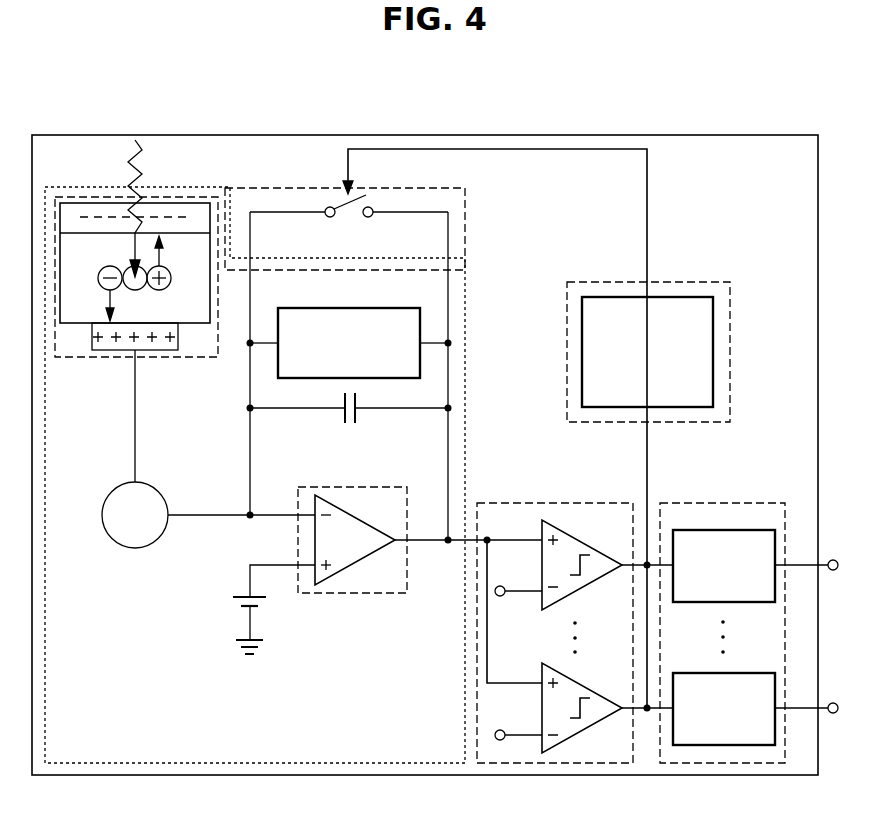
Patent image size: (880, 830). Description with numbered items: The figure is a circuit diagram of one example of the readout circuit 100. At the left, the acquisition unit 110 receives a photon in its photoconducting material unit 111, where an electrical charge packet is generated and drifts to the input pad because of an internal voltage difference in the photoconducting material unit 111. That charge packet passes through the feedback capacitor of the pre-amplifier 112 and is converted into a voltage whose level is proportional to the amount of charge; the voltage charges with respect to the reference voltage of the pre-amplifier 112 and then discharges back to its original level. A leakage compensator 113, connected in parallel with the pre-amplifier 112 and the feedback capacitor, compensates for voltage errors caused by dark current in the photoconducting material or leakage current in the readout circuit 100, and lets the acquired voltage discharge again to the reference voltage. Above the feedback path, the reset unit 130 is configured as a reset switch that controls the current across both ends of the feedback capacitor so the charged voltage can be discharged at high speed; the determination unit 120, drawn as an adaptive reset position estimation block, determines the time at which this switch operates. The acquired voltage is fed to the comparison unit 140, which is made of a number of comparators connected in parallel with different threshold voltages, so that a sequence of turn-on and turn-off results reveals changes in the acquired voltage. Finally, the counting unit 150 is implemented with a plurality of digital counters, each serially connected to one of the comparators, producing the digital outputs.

The readout circuit 100 is at (677, 135).
The acquisition unit 110 is at (173, 187).
The photoconducting material unit 111 is at (175, 358).
The pre-amplifier 112 is at (355, 485).
The leakage compensator 113 is at (365, 305).
The determination unit 120 is at (675, 282).
The reset unit 130 is at (397, 187).
The comparison unit 140 is at (563, 503).
The counting unit 150 is at (715, 503).